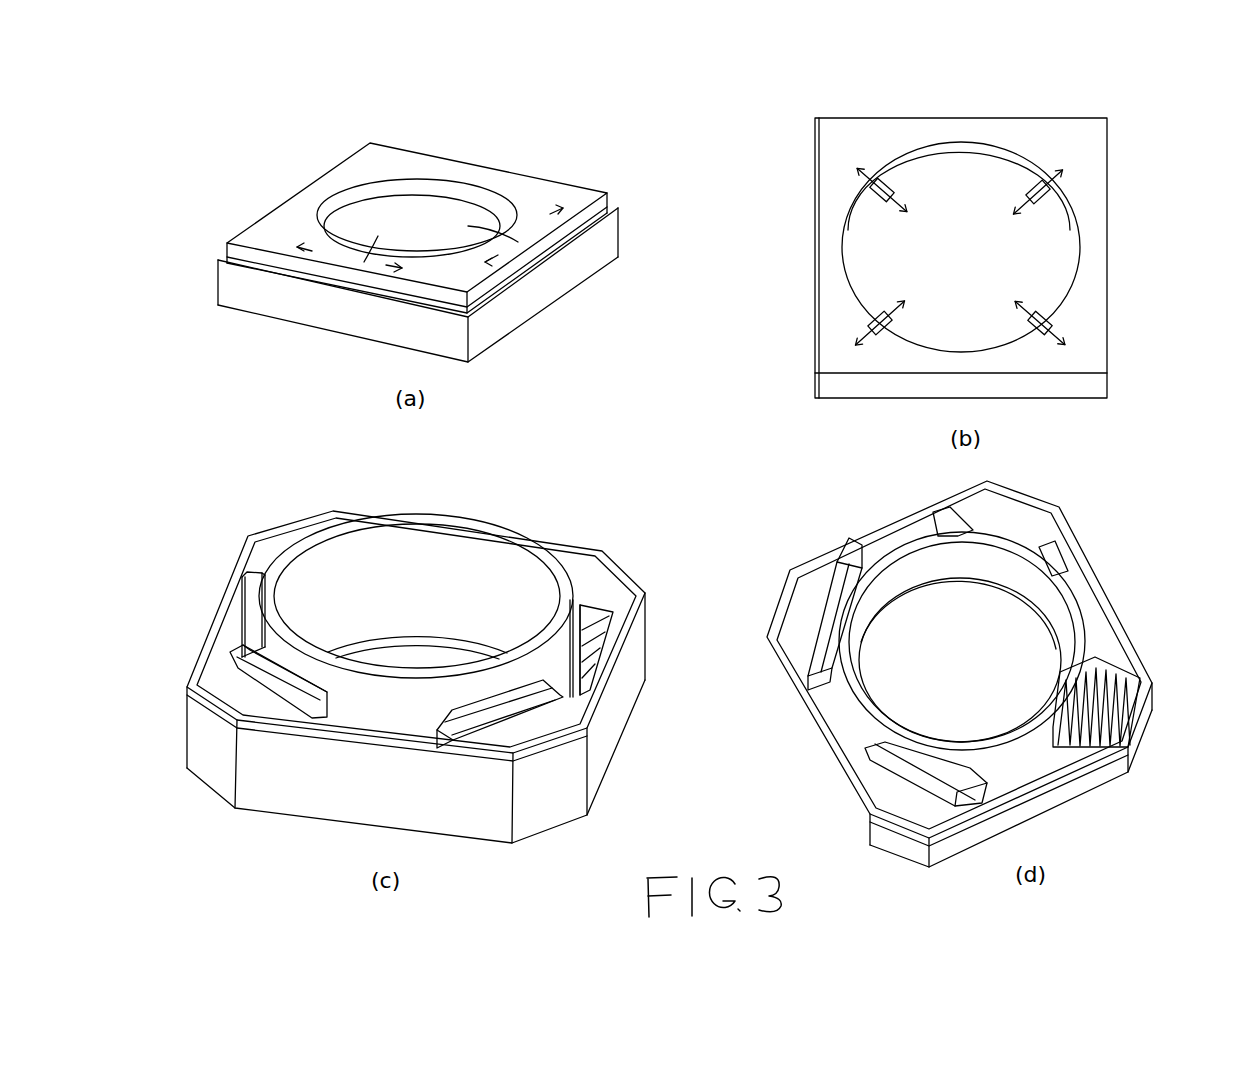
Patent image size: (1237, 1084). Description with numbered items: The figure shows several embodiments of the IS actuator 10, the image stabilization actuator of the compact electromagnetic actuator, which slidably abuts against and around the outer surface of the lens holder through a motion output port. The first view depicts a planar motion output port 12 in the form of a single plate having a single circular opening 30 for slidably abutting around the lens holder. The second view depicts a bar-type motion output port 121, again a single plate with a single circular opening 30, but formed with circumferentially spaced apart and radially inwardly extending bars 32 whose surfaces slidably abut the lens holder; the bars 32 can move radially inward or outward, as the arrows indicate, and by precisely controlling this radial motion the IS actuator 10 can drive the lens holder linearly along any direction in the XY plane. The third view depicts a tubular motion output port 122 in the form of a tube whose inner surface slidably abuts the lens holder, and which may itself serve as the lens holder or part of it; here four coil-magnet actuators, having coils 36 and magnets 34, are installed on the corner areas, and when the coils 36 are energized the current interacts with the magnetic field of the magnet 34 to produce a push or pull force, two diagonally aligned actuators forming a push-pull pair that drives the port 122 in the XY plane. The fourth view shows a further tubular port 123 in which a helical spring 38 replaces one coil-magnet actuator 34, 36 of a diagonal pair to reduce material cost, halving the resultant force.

The IS actuator 10 is at (578, 270).
The planar motion output port 12 is at (558, 182).
The circular opening 30 is at (463, 182).
The bars 32 is at (1027, 180).
The bar-type motion output port 121 is at (1108, 230).
The tubular motion output port 122 is at (453, 510).
The ring frame 123 is at (1094, 567).
The magnets 34 is at (327, 517).
The coils 36 is at (255, 600).
The helical spring 38 is at (1111, 687).